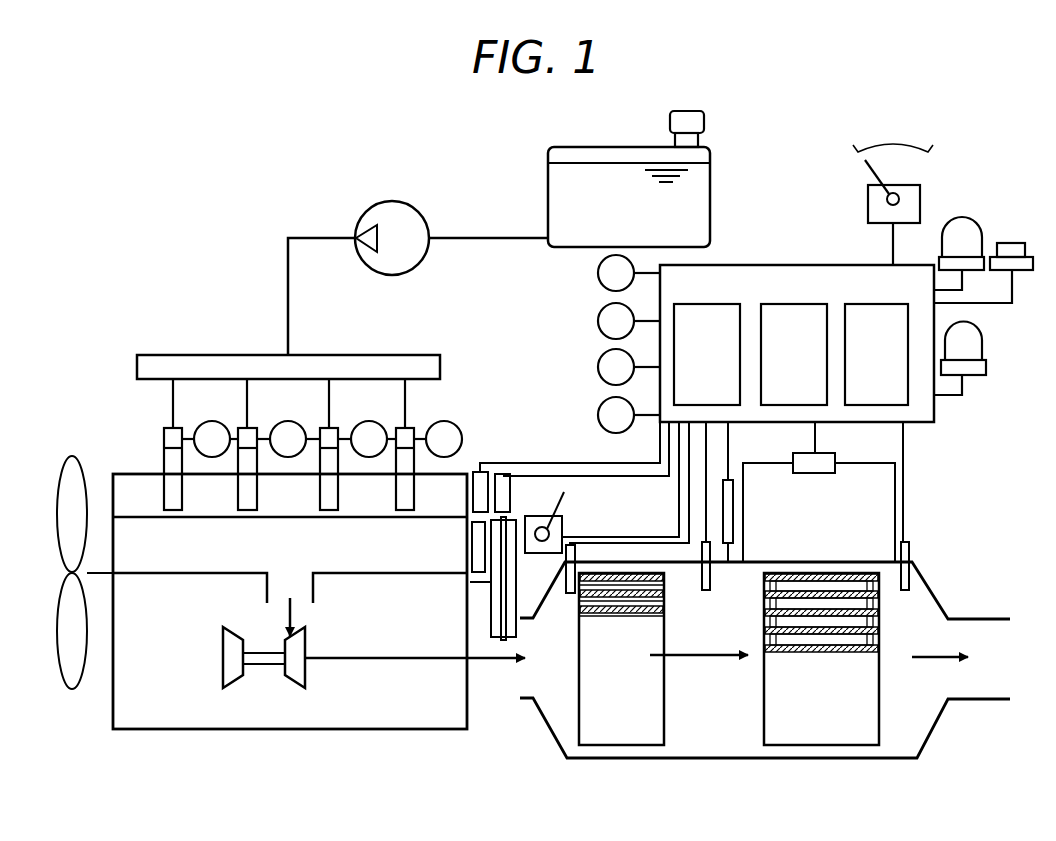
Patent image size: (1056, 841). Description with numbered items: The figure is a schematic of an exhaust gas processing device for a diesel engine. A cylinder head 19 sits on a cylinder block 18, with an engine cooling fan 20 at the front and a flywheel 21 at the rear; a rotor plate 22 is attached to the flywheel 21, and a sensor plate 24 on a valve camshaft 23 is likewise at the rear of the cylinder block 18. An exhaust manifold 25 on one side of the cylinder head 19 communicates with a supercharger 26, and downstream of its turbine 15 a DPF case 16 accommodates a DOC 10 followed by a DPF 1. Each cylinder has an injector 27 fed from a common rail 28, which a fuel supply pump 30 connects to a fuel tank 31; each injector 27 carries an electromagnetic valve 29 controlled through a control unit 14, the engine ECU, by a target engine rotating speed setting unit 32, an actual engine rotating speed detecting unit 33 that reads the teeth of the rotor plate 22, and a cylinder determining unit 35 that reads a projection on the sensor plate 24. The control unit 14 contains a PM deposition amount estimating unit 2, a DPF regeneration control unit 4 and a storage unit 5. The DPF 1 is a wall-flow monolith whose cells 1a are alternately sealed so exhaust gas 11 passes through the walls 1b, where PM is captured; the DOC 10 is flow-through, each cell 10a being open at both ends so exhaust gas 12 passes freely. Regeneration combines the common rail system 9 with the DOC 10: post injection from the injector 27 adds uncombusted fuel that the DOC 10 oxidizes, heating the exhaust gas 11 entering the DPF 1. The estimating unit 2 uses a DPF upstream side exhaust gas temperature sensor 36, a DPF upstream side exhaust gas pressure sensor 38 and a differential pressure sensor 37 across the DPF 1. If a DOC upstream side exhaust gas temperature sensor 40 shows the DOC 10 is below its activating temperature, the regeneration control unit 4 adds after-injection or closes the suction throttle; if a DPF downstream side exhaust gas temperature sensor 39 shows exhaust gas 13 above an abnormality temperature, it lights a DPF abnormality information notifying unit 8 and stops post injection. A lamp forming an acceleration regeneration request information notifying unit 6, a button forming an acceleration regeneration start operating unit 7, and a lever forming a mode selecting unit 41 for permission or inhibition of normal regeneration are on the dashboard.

The DPF 1 is at (828, 747).
The cells 1a is at (851, 640).
The walls 1b is at (803, 628).
The PM deposition amount estimating unit 2 is at (703, 312).
The DPF regeneration control unit 4 is at (785, 312).
The storage unit 5 is at (877, 312).
The acceleration regeneration request information notifying unit 6 is at (956, 227).
The acceleration regeneration start operating unit 7 is at (1010, 247).
The DPF abnormality information notifying unit 8 is at (965, 348).
The common rail system 9 is at (453, 405).
The DOC 10 is at (620, 725).
The cell 10a is at (626, 612).
The exhaust gas 11 is at (702, 662).
The exhaust gas 12 is at (478, 663).
The exhaust gas 13 is at (930, 660).
The control unit 14 is at (836, 275).
The turbine 15 is at (300, 670).
The DPF case 16 is at (734, 760).
The cylinder block 18 is at (432, 713).
The cylinder head 19 is at (460, 487).
The engine cooling fan 20 is at (68, 490).
The flywheel 21 is at (513, 623).
The rotor plate 22 is at (505, 530).
The valve camshaft 23 is at (470, 546).
The sensor plate 24 is at (472, 562).
The exhaust manifold 25 is at (160, 563).
The supercharger 26 is at (268, 672).
The injector 27 is at (243, 495).
The common rail 28 is at (215, 368).
The electromagnetic valve 29 is at (245, 437).
The fuel supply pump 30 is at (407, 218).
The fuel tank 31 is at (705, 152).
The target engine rotating speed setting unit 32 is at (565, 523).
The actual engine rotating speed detecting unit 33 is at (503, 495).
The cylinder determining unit 35 is at (480, 492).
The DPF upstream side exhaust gas temperature sensor 36 is at (706, 590).
The differential pressure sensor 37 is at (818, 470).
The DPF upstream side exhaust gas pressure sensor 38 is at (733, 510).
The DPF downstream side exhaust gas temperature sensor 39 is at (904, 590).
The DOC upstream side exhaust gas temperature sensor 40 is at (568, 575).
The mode selecting unit 41 is at (877, 190).